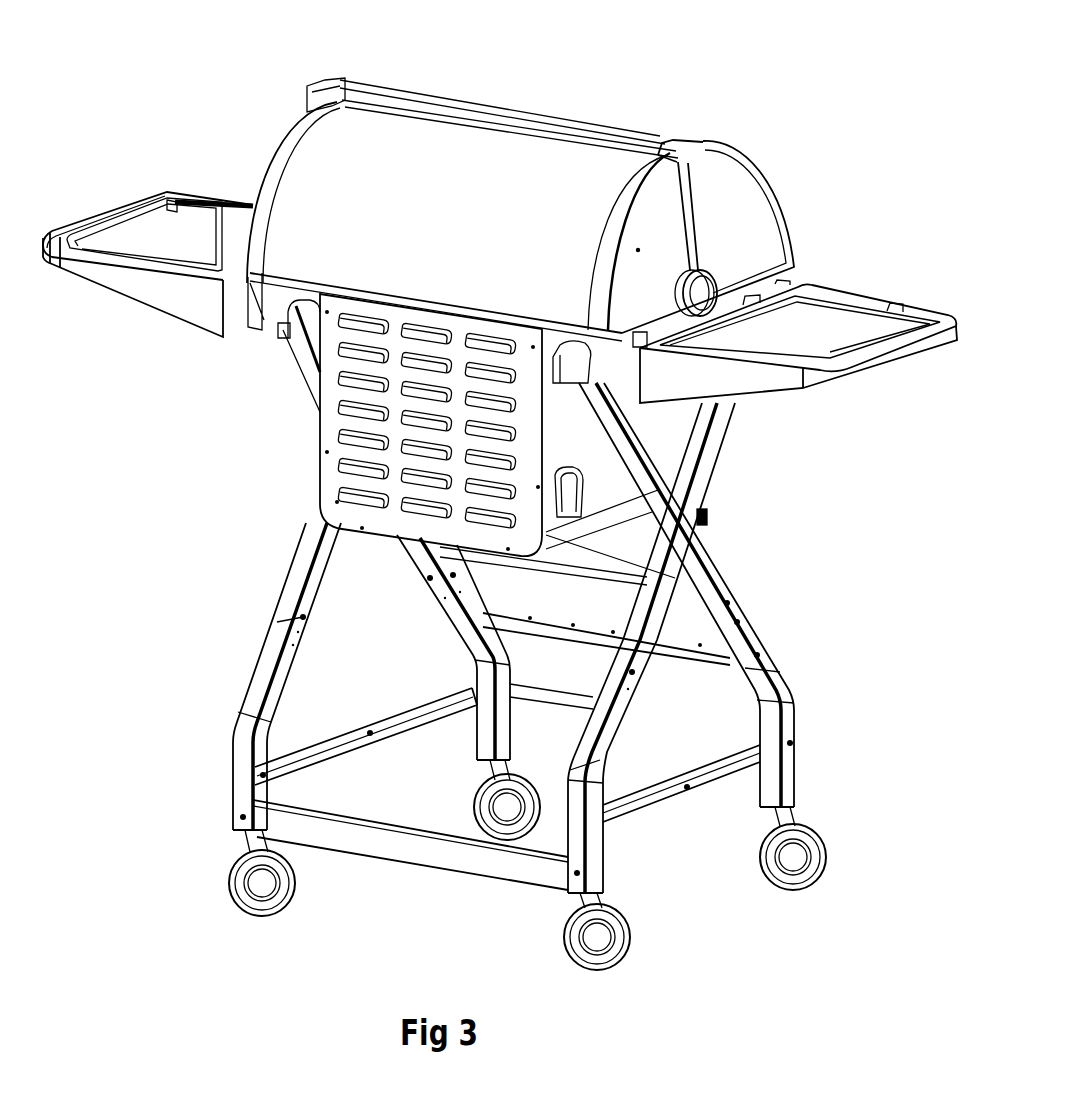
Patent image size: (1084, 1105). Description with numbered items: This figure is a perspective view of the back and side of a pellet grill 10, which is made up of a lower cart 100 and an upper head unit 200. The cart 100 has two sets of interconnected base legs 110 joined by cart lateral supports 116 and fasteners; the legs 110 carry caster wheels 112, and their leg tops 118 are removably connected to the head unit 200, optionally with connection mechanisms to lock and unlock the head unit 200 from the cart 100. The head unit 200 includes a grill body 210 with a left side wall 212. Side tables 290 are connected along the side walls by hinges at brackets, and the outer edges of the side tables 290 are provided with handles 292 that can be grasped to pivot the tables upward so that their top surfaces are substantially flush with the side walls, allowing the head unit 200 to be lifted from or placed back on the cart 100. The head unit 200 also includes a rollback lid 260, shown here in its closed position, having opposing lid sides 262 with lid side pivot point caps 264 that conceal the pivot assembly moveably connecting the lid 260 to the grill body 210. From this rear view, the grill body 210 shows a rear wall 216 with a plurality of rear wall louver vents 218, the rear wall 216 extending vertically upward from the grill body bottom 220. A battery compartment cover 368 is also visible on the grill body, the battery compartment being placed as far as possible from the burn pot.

The pellet grill 10 is at (795, 62).
The lower cart 100 is at (825, 595).
The base legs 110 is at (788, 712).
The caster wheels 112 is at (645, 948).
The cart lateral supports 116 is at (590, 603).
The leg tops 118 is at (280, 331).
The upper head unit 200 is at (262, 450).
The grill body 210 is at (687, 440).
The left side wall 212 is at (667, 196).
The rear wall 216 is at (335, 505).
The rear wall louver vents 218 is at (356, 377).
The grill body bottom 220 is at (394, 546).
The rollback lid 260 is at (479, 245).
The lid sides 262 is at (783, 208).
The lid side pivot point caps 264 is at (705, 288).
The side tables 290 is at (213, 212).
The handles 292 is at (80, 208).
The battery compartment cover 368 is at (590, 500).